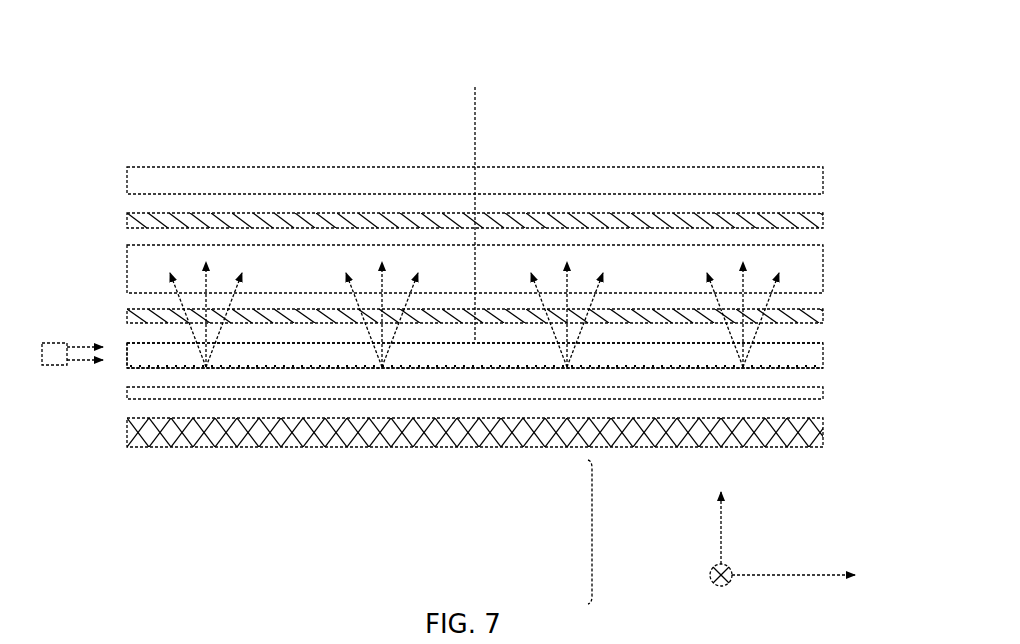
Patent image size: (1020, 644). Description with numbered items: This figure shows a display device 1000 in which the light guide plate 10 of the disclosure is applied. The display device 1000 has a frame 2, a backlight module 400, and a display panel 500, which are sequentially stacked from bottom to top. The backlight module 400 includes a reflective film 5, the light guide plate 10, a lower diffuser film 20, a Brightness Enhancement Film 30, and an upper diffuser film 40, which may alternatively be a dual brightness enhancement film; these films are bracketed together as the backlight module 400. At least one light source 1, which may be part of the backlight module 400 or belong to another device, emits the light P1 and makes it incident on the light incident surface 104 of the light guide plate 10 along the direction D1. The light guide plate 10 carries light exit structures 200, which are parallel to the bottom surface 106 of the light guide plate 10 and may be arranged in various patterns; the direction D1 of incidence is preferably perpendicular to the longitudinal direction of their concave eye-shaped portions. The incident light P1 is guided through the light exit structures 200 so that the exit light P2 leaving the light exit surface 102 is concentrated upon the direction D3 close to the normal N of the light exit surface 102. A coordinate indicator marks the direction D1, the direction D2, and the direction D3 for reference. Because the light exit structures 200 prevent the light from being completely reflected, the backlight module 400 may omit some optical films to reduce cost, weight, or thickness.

The display device 1000 is at (164, 55).
The light source 1 is at (42, 353).
The frame 2 is at (823, 432).
The reflective film 5 is at (823, 393).
The light guide plate 10 is at (825, 354).
The light exit surface 102 is at (136, 340).
The light incident surface 104 is at (125, 357).
The bottom surface 106 is at (135, 370).
The light exit structures 200 is at (798, 369).
The lower diffuser film 20 is at (825, 314).
The Brightness Enhancement Film 30 is at (825, 268).
The upper diffuser film 40 is at (825, 219).
The backlight module 400 is at (593, 533).
The display panel 500 is at (825, 180).
The normal N is at (475, 201).
The light P1 is at (85, 368).
The exit light P2 is at (205, 283).
The direction D1 is at (810, 576).
The second direction D2 is at (704, 576).
The direction D3 is at (724, 513).